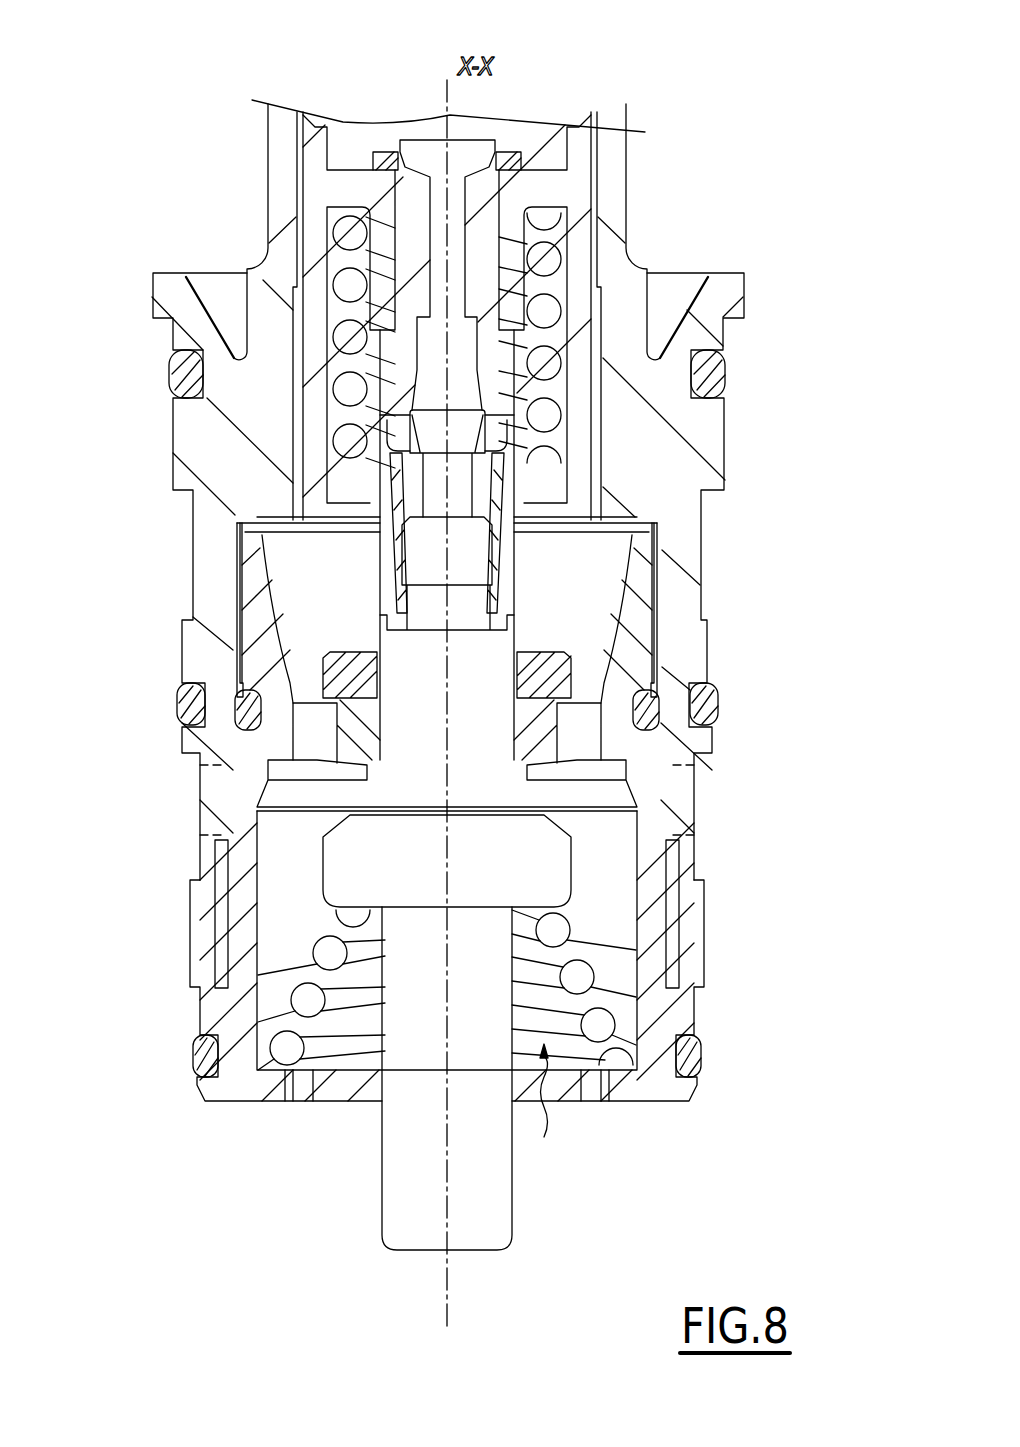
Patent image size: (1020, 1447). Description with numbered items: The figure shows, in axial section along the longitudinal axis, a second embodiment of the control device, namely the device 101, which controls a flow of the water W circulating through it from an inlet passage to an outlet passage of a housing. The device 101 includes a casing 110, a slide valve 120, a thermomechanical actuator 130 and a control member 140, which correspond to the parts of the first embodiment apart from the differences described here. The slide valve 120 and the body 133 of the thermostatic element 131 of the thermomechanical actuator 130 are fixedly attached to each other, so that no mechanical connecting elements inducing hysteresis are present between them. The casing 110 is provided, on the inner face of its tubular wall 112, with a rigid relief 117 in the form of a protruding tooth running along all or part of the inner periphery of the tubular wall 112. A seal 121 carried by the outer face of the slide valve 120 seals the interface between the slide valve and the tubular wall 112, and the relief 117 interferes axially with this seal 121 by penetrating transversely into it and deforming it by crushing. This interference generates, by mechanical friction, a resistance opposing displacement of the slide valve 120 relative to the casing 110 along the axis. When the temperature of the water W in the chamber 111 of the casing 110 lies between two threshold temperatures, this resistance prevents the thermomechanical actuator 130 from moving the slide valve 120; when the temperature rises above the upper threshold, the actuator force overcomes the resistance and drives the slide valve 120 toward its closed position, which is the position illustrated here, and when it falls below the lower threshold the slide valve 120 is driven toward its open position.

The device 101 is at (128, 167).
The control member 140 is at (537, 150).
The casing 110 is at (158, 432).
The tubular wall 112 is at (210, 530).
The chamber 111 is at (290, 597).
The slide valve 120 is at (216, 642).
The seal 121 is at (236, 660).
The relief 117 is at (233, 702).
The body 133 is at (500, 790).
The thermomechanical actuator 130 is at (353, 1137).
The thermostatic element 131 is at (494, 1207).
The water W is at (542, 1105).